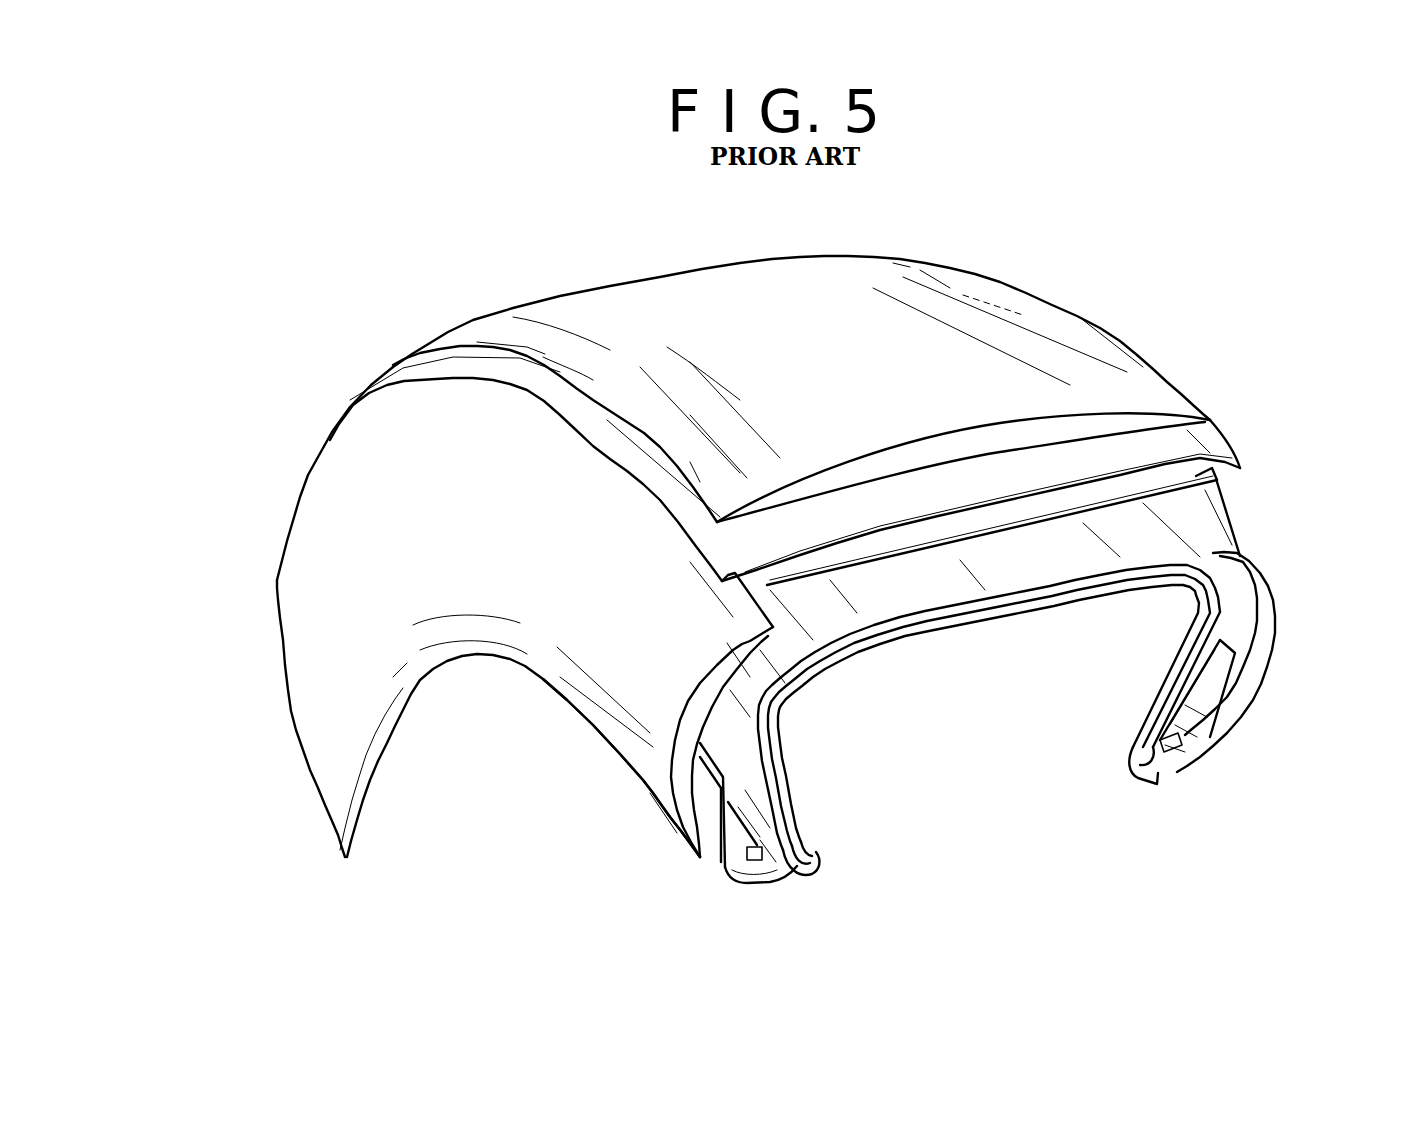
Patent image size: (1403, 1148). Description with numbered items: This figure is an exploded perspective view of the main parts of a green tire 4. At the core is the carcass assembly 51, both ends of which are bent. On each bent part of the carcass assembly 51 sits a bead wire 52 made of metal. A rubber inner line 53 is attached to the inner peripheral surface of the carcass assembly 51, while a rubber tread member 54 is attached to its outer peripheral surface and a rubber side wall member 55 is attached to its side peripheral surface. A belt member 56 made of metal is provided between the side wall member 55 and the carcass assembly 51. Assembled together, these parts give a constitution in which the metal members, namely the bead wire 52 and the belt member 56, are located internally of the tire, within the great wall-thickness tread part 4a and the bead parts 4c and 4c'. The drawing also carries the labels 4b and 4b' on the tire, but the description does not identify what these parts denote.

The green tire 4 is at (1257, 410).
The tread part 4a is at (1053, 317).
The side flange 4b is at (1267, 646).
The opening edge flange 4b' is at (607, 768).
The bead part 4c is at (1189, 734).
The bead part 4c' is at (726, 843).
The carcass assembly 51 is at (760, 713).
The bead wire 52 is at (800, 863).
The inner line 53 is at (796, 778).
The tread member 54 is at (1162, 450).
The side wall member 55 is at (680, 805).
The belt member 56 is at (1240, 468).